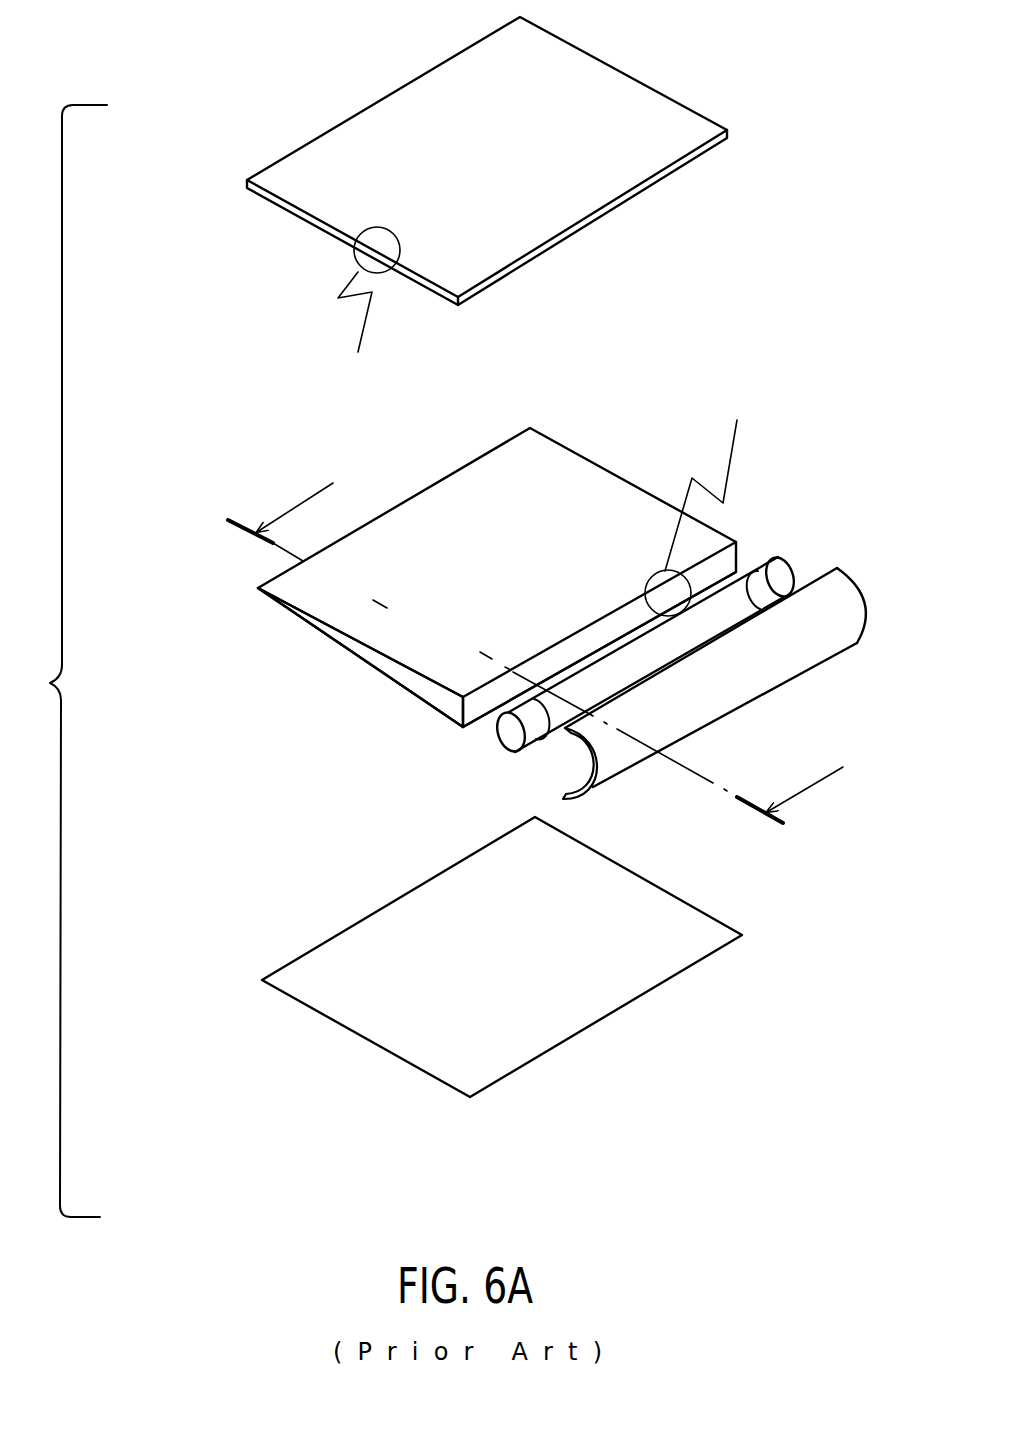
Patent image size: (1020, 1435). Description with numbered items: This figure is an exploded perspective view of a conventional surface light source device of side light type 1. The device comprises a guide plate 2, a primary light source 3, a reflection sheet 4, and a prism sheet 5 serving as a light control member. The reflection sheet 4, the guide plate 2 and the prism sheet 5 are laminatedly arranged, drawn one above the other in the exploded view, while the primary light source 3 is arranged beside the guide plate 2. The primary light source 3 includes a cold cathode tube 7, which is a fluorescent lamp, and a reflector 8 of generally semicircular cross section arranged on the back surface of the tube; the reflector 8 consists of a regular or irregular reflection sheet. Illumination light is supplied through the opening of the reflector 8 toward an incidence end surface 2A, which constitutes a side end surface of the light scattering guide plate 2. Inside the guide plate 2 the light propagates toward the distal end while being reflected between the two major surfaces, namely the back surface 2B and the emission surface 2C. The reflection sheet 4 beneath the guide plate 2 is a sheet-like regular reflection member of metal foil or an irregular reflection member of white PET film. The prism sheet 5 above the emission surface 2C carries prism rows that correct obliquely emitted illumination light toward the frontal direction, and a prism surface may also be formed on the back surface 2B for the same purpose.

The surface light source device of side light type 1 is at (223, 1082).
The guide plate 2 is at (486, 620).
The incidence end surface 2A is at (577, 643).
The back surface 2B is at (377, 672).
The emission surface 2C is at (345, 612).
The primary light source 3 is at (678, 756).
The reflection sheet 4 is at (517, 1062).
The prism sheet 5 is at (582, 92).
The cold cathode tube 7 is at (747, 600).
The reflector 8 is at (825, 633).